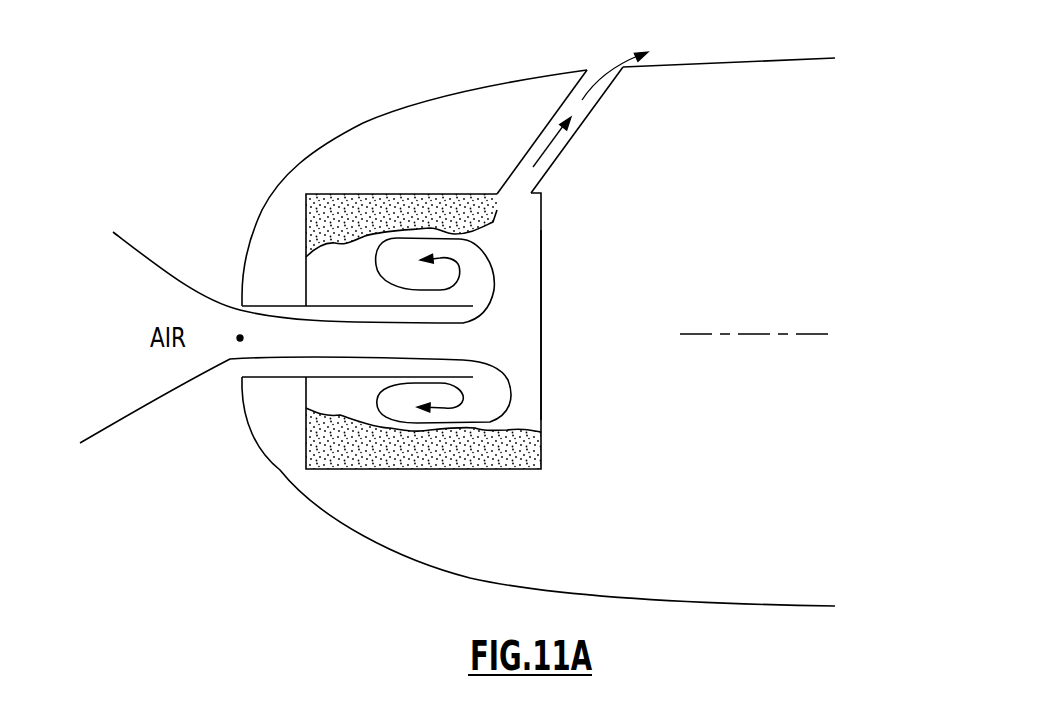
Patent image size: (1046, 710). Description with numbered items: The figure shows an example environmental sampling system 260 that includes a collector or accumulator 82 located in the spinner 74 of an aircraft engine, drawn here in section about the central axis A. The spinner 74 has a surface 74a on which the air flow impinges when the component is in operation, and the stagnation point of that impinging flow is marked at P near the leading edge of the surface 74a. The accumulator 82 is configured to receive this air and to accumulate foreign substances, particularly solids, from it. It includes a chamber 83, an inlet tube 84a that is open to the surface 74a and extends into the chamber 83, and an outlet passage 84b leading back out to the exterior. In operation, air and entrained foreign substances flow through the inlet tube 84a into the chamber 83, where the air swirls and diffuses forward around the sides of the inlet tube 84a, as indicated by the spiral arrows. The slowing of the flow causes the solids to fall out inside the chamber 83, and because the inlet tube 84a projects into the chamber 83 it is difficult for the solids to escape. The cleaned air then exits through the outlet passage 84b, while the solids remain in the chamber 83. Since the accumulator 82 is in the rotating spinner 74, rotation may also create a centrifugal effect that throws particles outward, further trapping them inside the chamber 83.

The spinner 74 is at (322, 515).
The surface 74a is at (240, 287).
The stagnation point P is at (240, 338).
The inlet tube 84a is at (452, 306).
The environmental sampling system 260 is at (385, 190).
The accumulator 82 is at (512, 470).
The chamber 83 is at (513, 283).
The outlet passage 84b is at (583, 105).
The engine central axis A is at (758, 334).